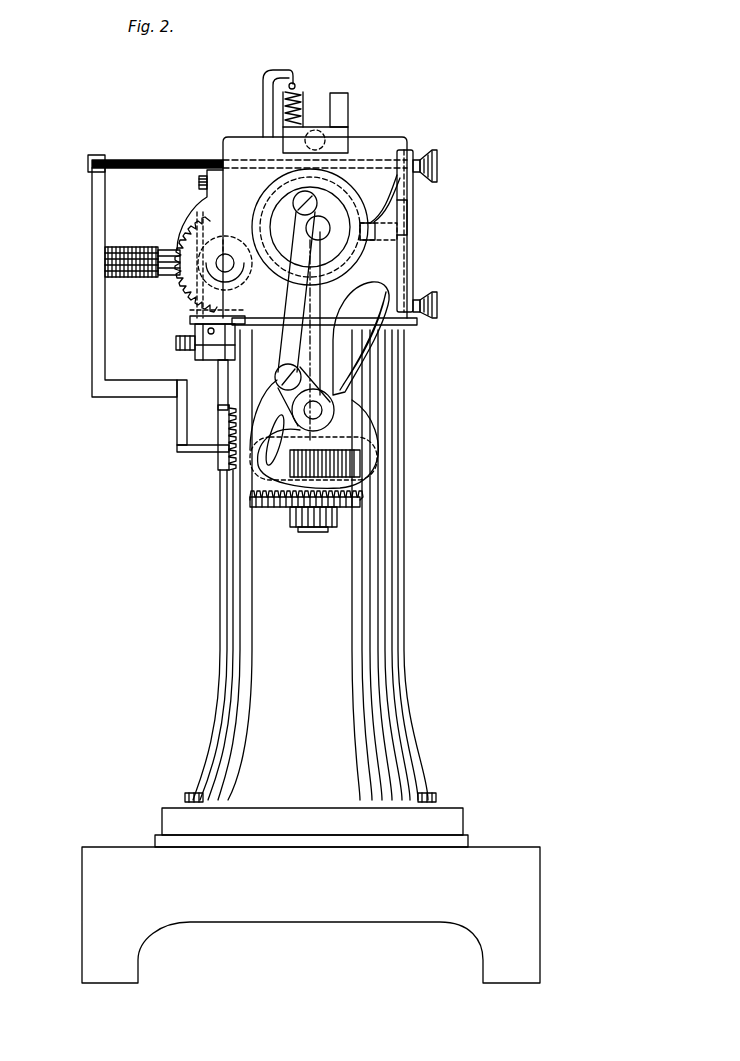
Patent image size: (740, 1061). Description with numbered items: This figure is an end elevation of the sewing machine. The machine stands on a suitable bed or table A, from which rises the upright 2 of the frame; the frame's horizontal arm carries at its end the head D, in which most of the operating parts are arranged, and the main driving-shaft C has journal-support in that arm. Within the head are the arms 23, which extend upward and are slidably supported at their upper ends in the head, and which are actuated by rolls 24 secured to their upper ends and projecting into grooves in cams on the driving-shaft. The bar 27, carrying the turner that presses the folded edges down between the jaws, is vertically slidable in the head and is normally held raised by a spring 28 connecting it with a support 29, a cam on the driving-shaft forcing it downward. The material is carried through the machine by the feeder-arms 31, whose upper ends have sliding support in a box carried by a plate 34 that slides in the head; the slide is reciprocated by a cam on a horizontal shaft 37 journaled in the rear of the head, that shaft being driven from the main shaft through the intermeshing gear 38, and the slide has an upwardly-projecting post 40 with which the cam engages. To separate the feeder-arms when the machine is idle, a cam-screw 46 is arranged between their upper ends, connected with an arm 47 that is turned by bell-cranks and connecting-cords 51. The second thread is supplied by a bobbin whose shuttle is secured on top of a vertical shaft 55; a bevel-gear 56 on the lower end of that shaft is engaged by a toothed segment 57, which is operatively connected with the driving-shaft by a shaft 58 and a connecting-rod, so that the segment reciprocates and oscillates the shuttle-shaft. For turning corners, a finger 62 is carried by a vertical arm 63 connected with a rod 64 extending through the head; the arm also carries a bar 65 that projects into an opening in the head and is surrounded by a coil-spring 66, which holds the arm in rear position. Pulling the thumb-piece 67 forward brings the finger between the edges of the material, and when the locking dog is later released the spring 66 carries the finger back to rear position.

The upright 2 is at (224, 630).
The arms 23 is at (400, 228).
The rolls 24 is at (380, 227).
The bar 27 is at (341, 104).
The spring 28 is at (294, 88).
The support 29 is at (262, 84).
The feeder-arms 31 is at (218, 393).
The plate 34 is at (190, 321).
The horizontal shaft 37 is at (230, 268).
The gear 38 is at (190, 293).
The post 40 is at (195, 310).
The cam-screw 46 is at (176, 343).
The arm 47 is at (190, 352).
The connecting-cords 51 is at (290, 302).
The vertical shaft 55 is at (313, 532).
The bevel-gear 56 is at (291, 520).
The toothed segment 57 is at (230, 468).
The shaft 58 is at (312, 412).
The finger 62 is at (196, 450).
The vertical arm 63 is at (92, 322).
The rod 64 is at (157, 160).
The bar 65 is at (131, 247).
The spring 66 is at (148, 278).
The thumb-piece 67 is at (427, 150).
The bed or table A is at (311, 895).
The main driving-shaft C is at (310, 304).
The head D is at (297, 231).